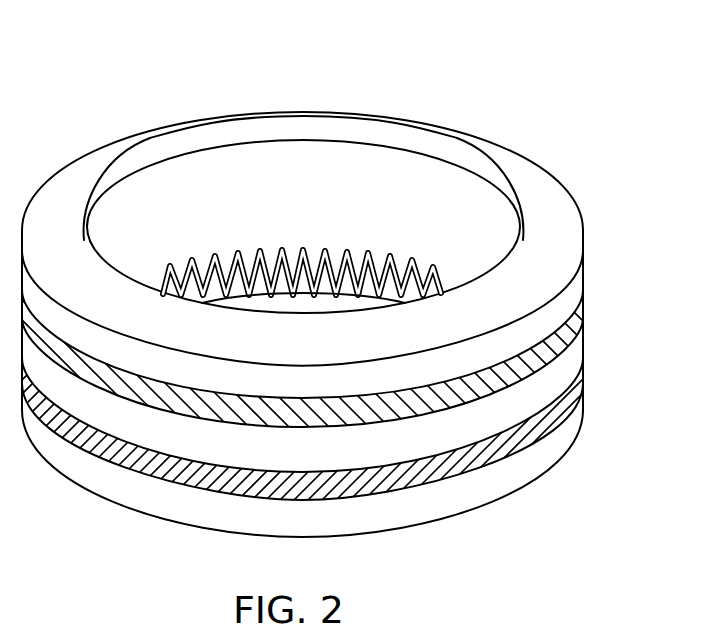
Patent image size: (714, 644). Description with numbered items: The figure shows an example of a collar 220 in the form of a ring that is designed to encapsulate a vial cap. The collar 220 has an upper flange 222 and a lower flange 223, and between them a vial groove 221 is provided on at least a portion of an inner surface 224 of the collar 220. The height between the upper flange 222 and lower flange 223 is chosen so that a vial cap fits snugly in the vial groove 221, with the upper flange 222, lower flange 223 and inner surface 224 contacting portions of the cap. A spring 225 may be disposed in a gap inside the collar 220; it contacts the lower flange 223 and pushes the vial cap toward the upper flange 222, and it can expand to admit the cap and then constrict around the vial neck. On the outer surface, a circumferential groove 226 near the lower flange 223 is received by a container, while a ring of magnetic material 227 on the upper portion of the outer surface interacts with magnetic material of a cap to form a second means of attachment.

The collar 220 is at (357, 300).
The vial groove 221 is at (472, 212).
The upper flange 222 is at (548, 257).
The lower flange 223 is at (405, 537).
The inner surface 224 is at (162, 215).
The spring 225 is at (259, 250).
The circumferential groove 226 is at (553, 409).
The magnetic material 227 is at (575, 343).